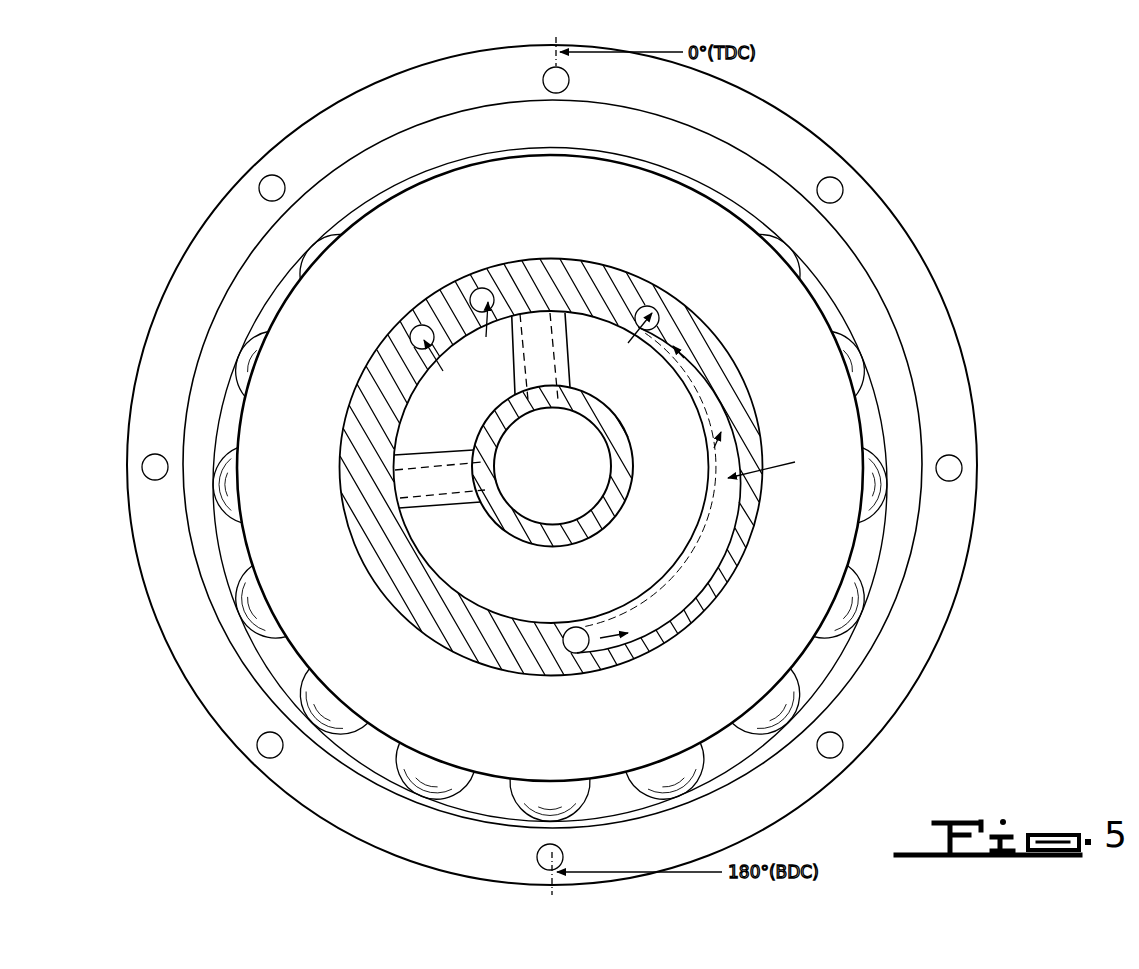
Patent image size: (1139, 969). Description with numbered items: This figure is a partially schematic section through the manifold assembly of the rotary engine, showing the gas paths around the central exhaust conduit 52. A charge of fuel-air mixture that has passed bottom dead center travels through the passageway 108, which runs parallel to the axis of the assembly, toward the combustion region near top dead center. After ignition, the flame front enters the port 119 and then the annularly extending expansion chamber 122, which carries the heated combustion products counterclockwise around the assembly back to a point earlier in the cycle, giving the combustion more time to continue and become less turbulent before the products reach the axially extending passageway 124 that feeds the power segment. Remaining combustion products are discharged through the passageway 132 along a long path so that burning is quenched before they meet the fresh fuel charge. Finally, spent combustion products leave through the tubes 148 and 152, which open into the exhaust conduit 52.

The exhaust conduit 52 is at (622, 441).
The passageway 108 is at (493, 280).
The port 119 is at (575, 627).
The expansion chamber 122 is at (711, 456).
The passageway 124 is at (658, 307).
The passageway 132 is at (410, 330).
The tube 148 is at (439, 505).
The tube 152 is at (508, 392).